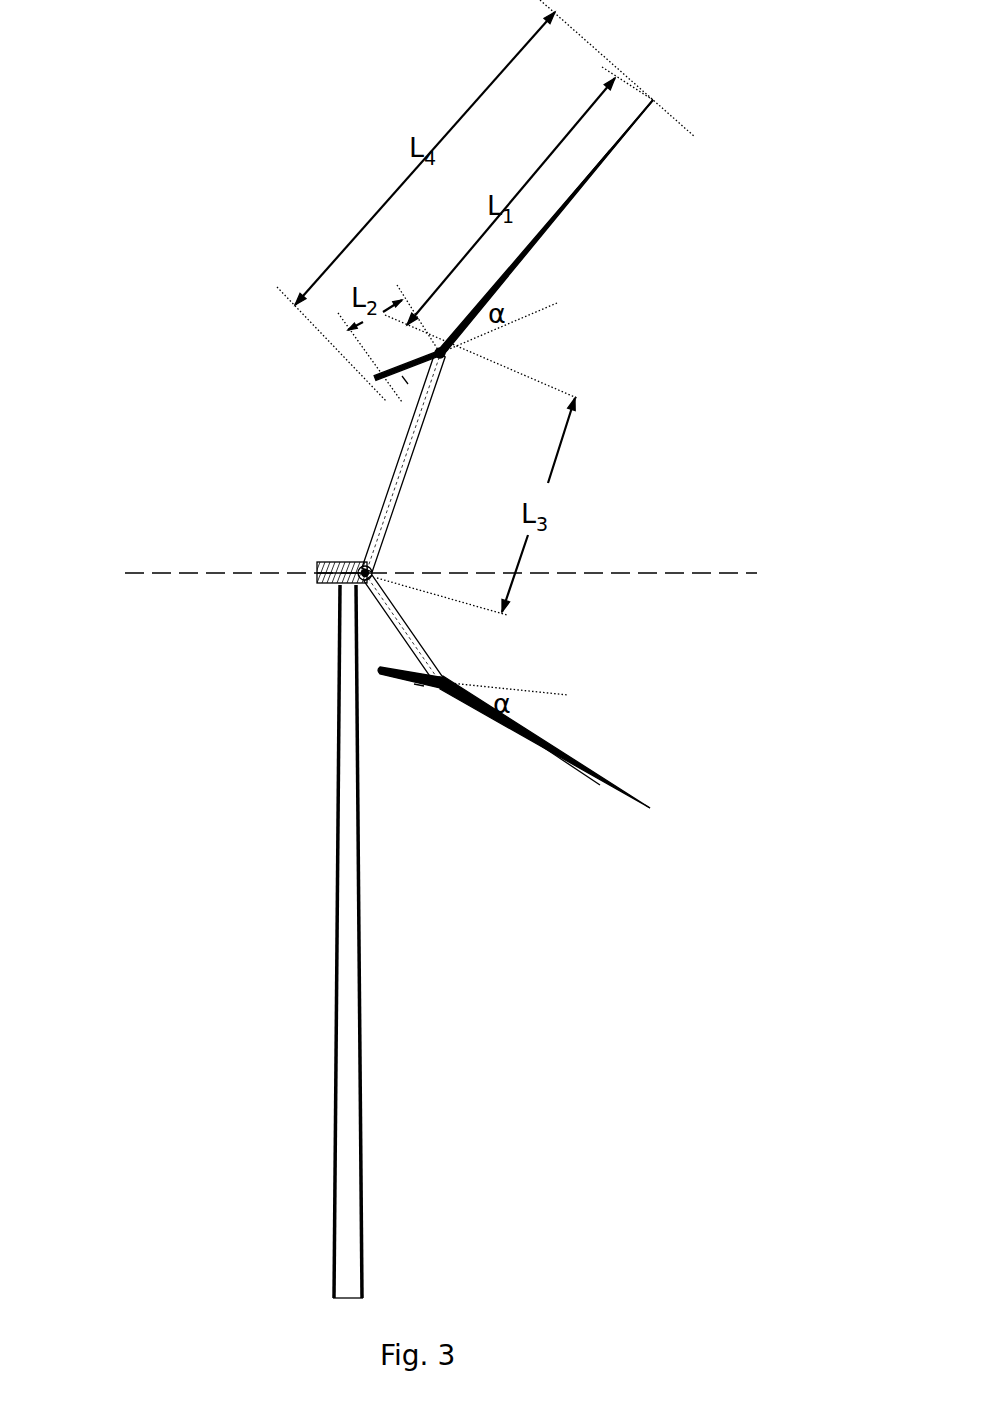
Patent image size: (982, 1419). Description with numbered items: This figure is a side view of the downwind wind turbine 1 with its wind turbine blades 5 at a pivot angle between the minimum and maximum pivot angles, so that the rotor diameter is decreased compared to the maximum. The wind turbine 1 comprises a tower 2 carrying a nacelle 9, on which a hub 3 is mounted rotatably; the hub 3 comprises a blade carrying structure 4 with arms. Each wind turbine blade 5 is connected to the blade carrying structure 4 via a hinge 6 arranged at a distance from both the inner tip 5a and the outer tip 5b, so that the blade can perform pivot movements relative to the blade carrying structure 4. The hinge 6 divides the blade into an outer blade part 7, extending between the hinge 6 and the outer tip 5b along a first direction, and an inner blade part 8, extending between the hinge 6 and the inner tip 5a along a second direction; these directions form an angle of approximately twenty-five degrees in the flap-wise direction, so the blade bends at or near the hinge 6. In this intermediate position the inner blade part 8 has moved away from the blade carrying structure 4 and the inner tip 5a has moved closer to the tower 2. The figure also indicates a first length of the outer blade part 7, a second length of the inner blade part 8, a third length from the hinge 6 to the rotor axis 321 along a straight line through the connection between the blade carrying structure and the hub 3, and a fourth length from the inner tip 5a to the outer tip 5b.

The wind turbine 1 is at (95, 158).
The tower 2 is at (350, 1117).
The hub 3 is at (378, 570).
The blade carrying structure 4 is at (382, 502).
The wind turbine blade 5 is at (538, 263).
The inner tip 5a is at (375, 377).
The outer tip 5b is at (653, 100).
The hinge 6 is at (443, 358).
The outer blade part 7 is at (578, 190).
The inner blade part 8 is at (405, 380).
The nacelle 9 is at (317, 582).
The rotor axis 321 is at (188, 573).